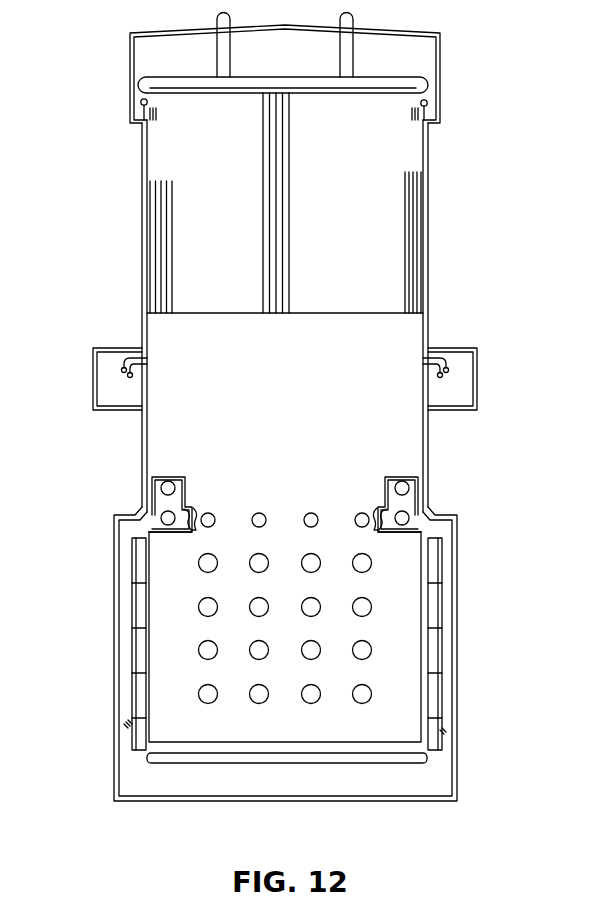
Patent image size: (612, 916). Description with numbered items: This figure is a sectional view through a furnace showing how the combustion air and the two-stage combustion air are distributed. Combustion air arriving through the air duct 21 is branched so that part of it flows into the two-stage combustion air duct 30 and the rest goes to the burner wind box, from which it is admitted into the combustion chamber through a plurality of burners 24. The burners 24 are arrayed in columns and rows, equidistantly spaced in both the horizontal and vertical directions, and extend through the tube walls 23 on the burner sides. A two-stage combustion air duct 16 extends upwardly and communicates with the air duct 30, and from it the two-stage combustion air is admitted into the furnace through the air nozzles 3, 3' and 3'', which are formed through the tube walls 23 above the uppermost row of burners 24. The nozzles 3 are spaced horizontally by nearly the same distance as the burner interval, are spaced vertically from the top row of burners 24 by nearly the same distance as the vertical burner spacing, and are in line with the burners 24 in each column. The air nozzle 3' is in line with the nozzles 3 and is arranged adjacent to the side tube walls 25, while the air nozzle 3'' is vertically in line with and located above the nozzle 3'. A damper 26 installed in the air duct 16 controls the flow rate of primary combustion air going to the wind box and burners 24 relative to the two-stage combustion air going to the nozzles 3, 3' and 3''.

The two-stage combustion air nozzle 3 is at (285, 495).
The air nozzle 3' is at (332, 490).
The air nozzle 3'' is at (285, 478).
The two-stage combustion air duct 16 is at (113, 596).
The air duct 21 is at (283, 790).
The tube wall 23 is at (398, 430).
The burner 24 is at (199, 608).
The side tube wall 25 is at (148, 420).
The damper 26 is at (127, 727).
The two-stage combustion air duct 30 is at (182, 530).